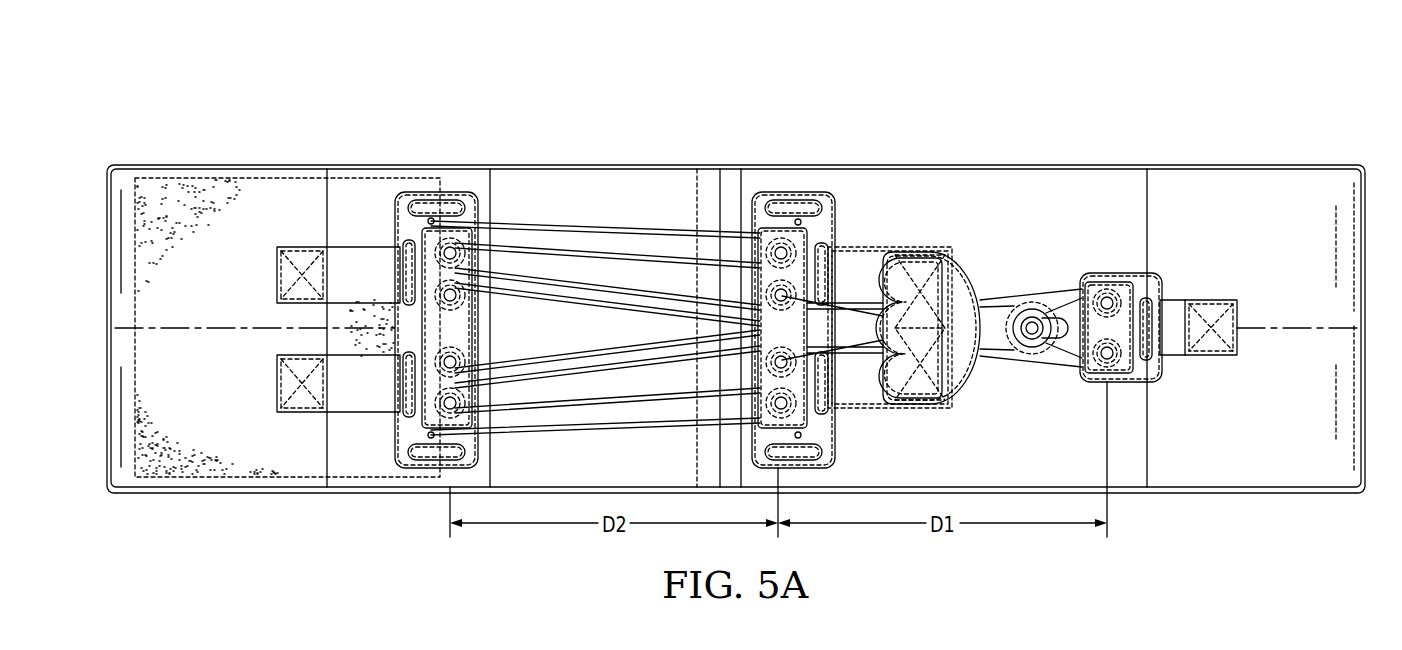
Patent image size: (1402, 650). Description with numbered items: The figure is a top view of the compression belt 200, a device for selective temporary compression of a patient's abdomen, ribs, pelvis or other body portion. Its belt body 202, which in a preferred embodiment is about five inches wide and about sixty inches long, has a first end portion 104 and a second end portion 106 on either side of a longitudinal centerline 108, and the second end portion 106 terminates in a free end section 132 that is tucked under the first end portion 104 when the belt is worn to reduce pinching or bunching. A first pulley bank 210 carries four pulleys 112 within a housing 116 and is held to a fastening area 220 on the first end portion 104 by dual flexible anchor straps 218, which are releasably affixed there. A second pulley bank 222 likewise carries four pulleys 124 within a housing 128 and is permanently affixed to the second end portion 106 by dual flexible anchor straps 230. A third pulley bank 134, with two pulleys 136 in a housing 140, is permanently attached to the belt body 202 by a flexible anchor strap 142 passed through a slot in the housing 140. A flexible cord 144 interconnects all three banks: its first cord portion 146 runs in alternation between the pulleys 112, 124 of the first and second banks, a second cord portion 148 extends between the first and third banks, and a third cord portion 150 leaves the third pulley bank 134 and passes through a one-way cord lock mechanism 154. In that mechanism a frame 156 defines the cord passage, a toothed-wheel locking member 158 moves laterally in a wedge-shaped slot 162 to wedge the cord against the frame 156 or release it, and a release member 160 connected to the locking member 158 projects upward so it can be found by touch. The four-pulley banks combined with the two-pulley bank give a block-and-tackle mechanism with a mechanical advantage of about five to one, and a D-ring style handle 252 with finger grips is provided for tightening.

The first end portion 104 is at (245, 165).
The second end portion 106 is at (730, 168).
The centerline 108 is at (1265, 330).
The pulleys 112 is at (446, 405).
The housing 116 is at (447, 225).
The pulleys 124 is at (789, 254).
The housing 128 is at (792, 210).
The free end section 132 is at (637, 469).
The third pulley bank 134 is at (1106, 266).
The pulleys 136 is at (1112, 360).
The housing 140 is at (1140, 367).
The flexible anchor strap 142 is at (1202, 300).
The flexible cord 144 is at (653, 230).
The first cord portion 146 is at (578, 196).
The second cord portion 148 is at (1064, 279).
The third cord portion 150 is at (988, 294).
The cord lock mechanism 154 is at (1030, 318).
The frame 156 is at (1030, 350).
The locking member 158 is at (1005, 352).
The release member 160 is at (998, 306).
The wedge-shaped slot 162 is at (1050, 342).
The compression belt 200 is at (1198, 81).
The belt body 202 is at (1340, 177).
The first pulley bank 210 is at (418, 226).
The flexible anchor straps 218 is at (302, 247).
The fastening area 220 is at (178, 190).
The second pulley bank 222 is at (821, 230).
The flexible anchor straps 230 is at (865, 410).
The handle 252 is at (947, 398).